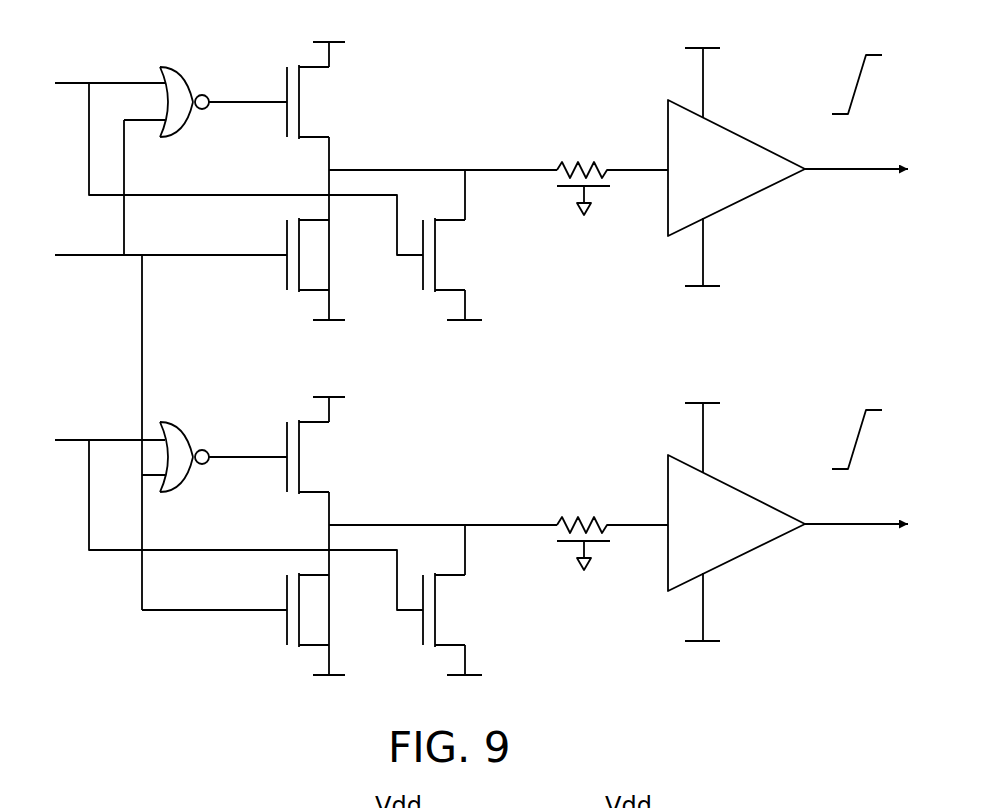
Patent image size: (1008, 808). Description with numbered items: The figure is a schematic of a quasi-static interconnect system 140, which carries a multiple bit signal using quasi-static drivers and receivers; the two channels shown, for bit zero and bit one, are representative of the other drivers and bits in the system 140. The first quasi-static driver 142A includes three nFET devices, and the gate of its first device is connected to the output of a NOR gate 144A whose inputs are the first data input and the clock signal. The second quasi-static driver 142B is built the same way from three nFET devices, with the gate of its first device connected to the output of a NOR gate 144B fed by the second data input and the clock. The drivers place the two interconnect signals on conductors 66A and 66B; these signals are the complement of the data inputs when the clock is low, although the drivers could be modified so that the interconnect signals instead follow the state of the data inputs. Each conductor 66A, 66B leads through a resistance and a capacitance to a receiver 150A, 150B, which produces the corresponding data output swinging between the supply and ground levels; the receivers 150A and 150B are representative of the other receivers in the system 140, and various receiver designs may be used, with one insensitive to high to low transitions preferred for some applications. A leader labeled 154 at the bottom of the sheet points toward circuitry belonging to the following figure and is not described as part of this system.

The quasi-static interconnect system 140 is at (550, 105).
The quasi-static driver 142A is at (457, 118).
The quasi-static driver 142B is at (409, 528).
The NOR gate 144A is at (228, 58).
The NOR gate 144B is at (223, 437).
The conductor 66A is at (482, 172).
The conductor 66B is at (443, 539).
The receiver 150A is at (738, 200).
The receiver 150B is at (763, 507).
The circuit of following figure 154 is at (275, 807).